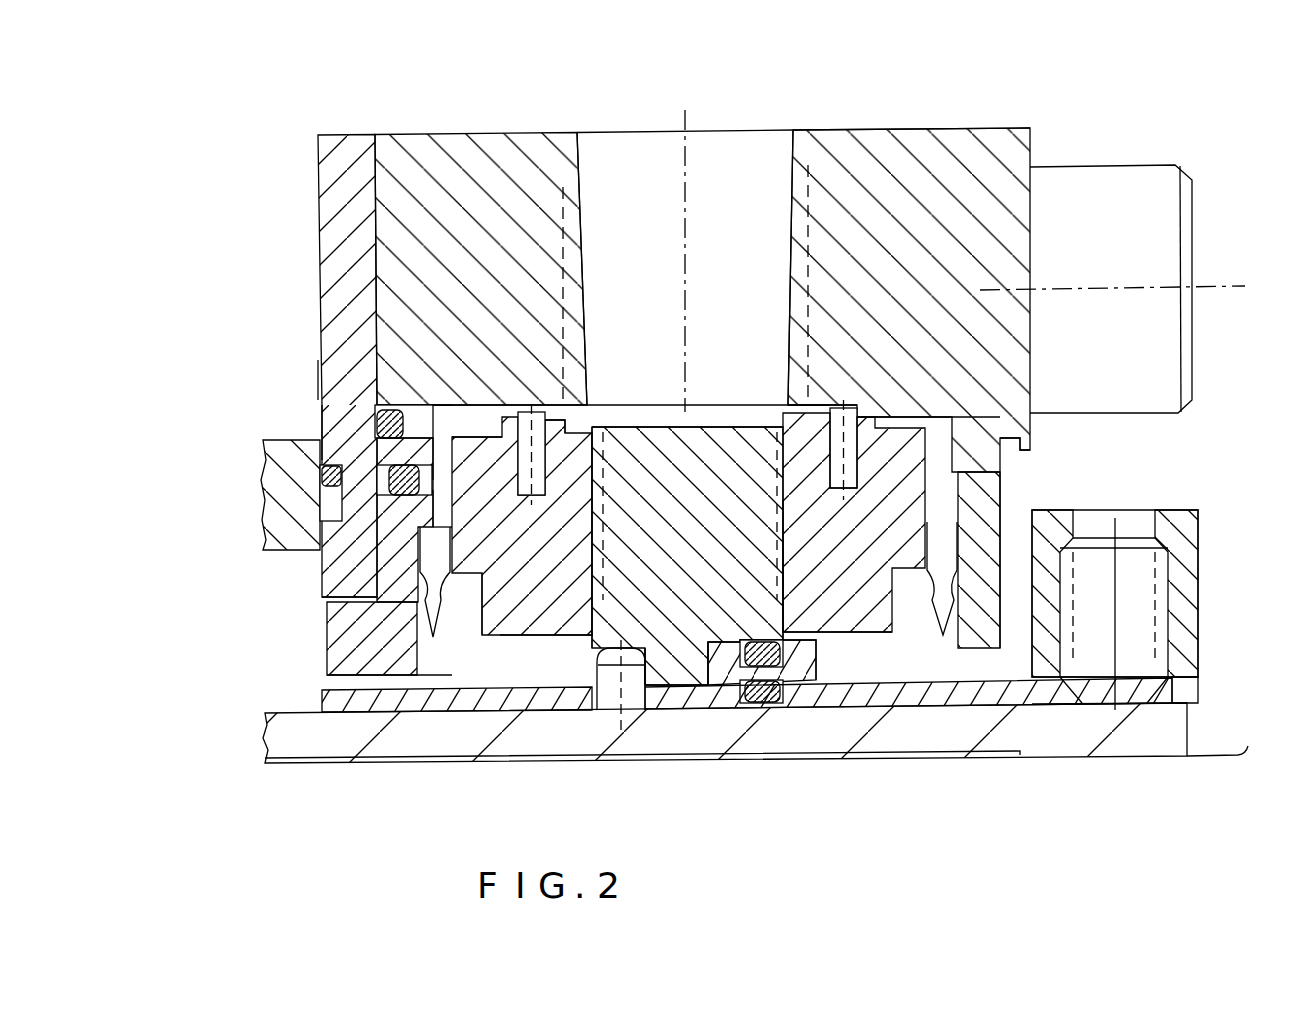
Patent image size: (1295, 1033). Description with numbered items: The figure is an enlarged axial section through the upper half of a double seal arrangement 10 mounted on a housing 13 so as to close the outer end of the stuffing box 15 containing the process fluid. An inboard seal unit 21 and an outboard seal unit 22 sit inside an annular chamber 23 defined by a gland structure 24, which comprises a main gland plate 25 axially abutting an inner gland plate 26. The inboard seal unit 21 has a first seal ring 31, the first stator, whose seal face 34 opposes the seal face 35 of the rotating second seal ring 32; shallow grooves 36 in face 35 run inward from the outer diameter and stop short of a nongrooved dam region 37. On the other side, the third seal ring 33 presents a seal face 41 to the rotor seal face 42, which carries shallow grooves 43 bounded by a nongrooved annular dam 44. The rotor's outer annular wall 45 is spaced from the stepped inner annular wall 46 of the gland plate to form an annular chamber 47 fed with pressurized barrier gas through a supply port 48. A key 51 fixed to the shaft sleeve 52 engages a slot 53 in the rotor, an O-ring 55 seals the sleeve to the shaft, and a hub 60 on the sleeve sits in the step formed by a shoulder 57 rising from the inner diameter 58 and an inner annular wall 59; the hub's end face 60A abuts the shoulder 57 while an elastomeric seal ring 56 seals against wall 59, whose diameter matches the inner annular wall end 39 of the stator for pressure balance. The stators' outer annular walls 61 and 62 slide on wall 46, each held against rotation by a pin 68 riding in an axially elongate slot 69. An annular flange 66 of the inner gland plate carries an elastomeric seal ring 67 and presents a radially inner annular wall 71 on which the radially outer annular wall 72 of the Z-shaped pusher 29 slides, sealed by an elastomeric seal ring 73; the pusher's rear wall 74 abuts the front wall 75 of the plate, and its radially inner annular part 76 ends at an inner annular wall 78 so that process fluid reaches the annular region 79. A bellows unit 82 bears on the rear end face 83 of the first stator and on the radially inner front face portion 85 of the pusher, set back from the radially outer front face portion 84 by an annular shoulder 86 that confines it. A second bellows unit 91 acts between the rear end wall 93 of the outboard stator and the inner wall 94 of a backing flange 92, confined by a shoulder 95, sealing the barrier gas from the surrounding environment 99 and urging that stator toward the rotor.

The double seal arrangement 10 is at (1078, 87).
The housing 13 is at (272, 479).
The stuffing box 15 is at (342, 655).
The inboard seal unit 21 is at (483, 350).
The outboard seal unit 22 is at (866, 353).
The annular chamber 23 is at (960, 414).
The gland structure 24 is at (935, 128).
The main gland plate 25 is at (430, 150).
The inner gland plate 26 is at (335, 243).
The pusher 29 is at (330, 645).
The first seal ring 31 is at (542, 636).
The second seal ring 32 is at (648, 688).
The third seal ring 33 is at (822, 630).
The seal face 34 is at (640, 420).
The seal face 35 is at (522, 550).
The shallow grooves 36 is at (604, 425).
The dam region 37 is at (546, 659).
The inner annular wall end 39 is at (520, 637).
The seal face 41 is at (770, 420).
The seal face 42 is at (808, 577).
The shallow grooves 43 is at (792, 528).
The nongrooved annular dam 44 is at (800, 643).
The outer annular wall 45 is at (711, 407).
The stepped inner annular wall 46 is at (480, 405).
The annular chamber 47 is at (667, 413).
The supply port 48 is at (760, 143).
The key 51 is at (620, 712).
The shaft sleeve 52 is at (960, 742).
The slot 53 is at (592, 600).
The O-ring 55 is at (768, 690).
The elastomeric seal ring 56 is at (762, 628).
The shoulder 57 is at (760, 667).
The inner diameter 58 is at (703, 668).
The inner annular wall 59 is at (717, 628).
The hub 60 is at (792, 682).
The inner annular end face 60A is at (708, 665).
The outer annular wall 61 is at (455, 425).
The outer annular wall 62 is at (822, 395).
The annular flange 66 is at (375, 445).
The elastomeric seal ring 67 is at (377, 403).
The pin 68 is at (530, 400).
The axially elongate slot 69 is at (923, 395).
The radially inner annular wall 71 is at (395, 412).
The radially outer annular wall 72 is at (382, 478).
The elastomeric seal ring 73 is at (378, 483).
The rear wall 74 is at (380, 568).
The front wall 75 is at (350, 592).
The radially inner annular part 76 is at (330, 678).
The inner annular wall 78 is at (340, 718).
The annular region 79 is at (410, 685).
The bellows unit 82 is at (448, 597).
The rear end face 83 is at (442, 497).
The radially outer front face portion 84 is at (452, 463).
The radially inner front face portion 85 is at (425, 672).
The annular shoulder 86 is at (450, 537).
The bellows unit 91 is at (1003, 615).
The backing flange 92 is at (997, 490).
The rear end wall 93 is at (980, 473).
The inner wall 94 is at (955, 638).
The shoulder 95 is at (998, 515).
The surrounding environment 99 is at (1268, 476).